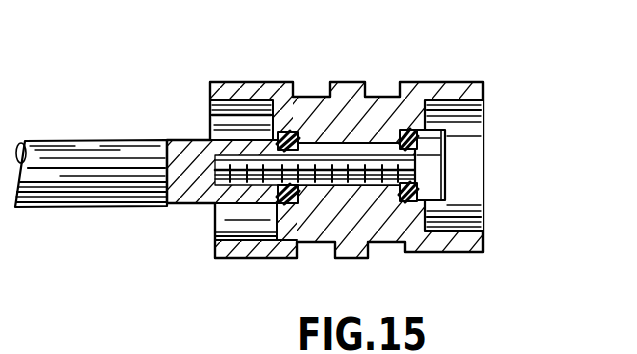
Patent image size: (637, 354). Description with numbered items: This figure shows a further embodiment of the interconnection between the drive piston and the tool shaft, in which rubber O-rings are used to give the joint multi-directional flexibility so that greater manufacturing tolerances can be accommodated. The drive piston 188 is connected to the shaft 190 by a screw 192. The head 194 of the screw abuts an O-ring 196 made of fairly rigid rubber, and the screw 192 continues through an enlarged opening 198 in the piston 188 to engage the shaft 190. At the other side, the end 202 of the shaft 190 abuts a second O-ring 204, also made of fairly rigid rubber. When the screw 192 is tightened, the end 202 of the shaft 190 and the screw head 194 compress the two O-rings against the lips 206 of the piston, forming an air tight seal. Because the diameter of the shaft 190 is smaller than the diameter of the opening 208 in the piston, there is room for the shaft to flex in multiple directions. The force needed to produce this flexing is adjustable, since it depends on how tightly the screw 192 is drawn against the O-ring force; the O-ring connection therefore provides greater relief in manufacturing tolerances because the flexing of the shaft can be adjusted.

The drive piston 188 is at (453, 82).
The shaft 190 is at (88, 140).
The screw 192 is at (320, 185).
The head 194 is at (437, 157).
The O-ring 196 is at (408, 203).
The enlarged opening 198 is at (345, 190).
The end 202 is at (273, 130).
The second O-ring 204 is at (292, 203).
The lips 206 is at (397, 135).
The opening 208 is at (213, 118).